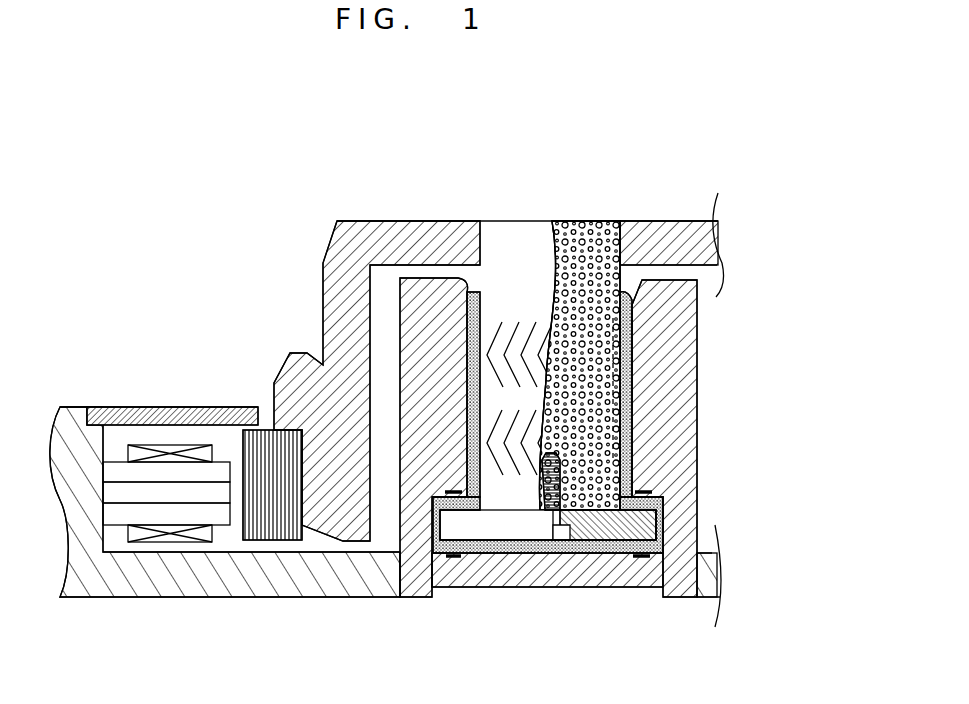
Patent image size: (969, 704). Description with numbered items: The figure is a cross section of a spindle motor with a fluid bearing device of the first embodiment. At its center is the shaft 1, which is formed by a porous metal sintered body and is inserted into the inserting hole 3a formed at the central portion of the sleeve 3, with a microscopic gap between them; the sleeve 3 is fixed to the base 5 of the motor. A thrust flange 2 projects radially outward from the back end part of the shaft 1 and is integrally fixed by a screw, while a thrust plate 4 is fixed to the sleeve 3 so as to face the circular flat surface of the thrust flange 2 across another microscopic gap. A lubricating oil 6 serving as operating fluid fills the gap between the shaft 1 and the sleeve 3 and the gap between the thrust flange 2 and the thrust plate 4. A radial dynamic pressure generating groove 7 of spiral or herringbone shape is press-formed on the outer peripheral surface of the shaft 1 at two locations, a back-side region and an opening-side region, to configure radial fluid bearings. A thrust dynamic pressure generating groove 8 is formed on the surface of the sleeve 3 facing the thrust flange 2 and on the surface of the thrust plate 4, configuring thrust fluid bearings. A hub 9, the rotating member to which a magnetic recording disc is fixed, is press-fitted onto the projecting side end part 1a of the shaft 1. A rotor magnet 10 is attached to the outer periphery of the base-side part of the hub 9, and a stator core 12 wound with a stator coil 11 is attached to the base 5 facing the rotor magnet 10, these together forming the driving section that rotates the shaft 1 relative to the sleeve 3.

The shaft 1 is at (530, 282).
The projecting side end part 1a is at (500, 245).
The thrust flange 2 is at (510, 525).
The sleeve 3 is at (660, 395).
The inserting hole 3a is at (617, 302).
The thrust plate 4 is at (582, 570).
The base 5 is at (230, 572).
The lubricating oil 6 is at (473, 290).
The radial dynamic pressure generating groove 7 is at (490, 460).
The thrust dynamic pressure generating groove 8 is at (450, 482).
The hub 9 is at (382, 240).
The rotor magnet 10 is at (275, 533).
The stator coil 11 is at (143, 535).
The stator core 12 is at (152, 472).